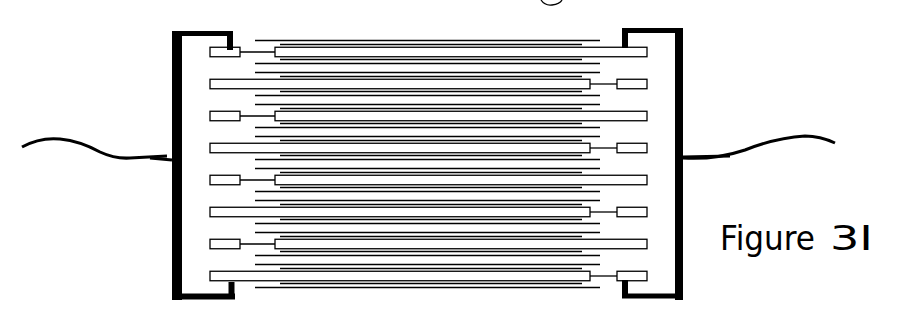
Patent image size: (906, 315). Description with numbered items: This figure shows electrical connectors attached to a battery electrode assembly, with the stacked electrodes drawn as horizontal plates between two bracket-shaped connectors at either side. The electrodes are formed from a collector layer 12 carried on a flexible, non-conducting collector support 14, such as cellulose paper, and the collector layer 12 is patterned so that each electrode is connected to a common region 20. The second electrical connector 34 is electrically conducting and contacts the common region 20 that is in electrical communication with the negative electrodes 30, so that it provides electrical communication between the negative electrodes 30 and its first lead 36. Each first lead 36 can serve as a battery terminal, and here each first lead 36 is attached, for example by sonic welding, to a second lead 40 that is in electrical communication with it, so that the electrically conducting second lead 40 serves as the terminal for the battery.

The collector layer 12 is at (636, 57).
The collector support 14 is at (248, 56).
The common region 20 is at (620, 203).
The negative electrodes 30 is at (680, 28).
The second electrical connector 34 is at (172, 33).
The first lead 36 is at (166, 162).
The second lead 40 is at (88, 147).